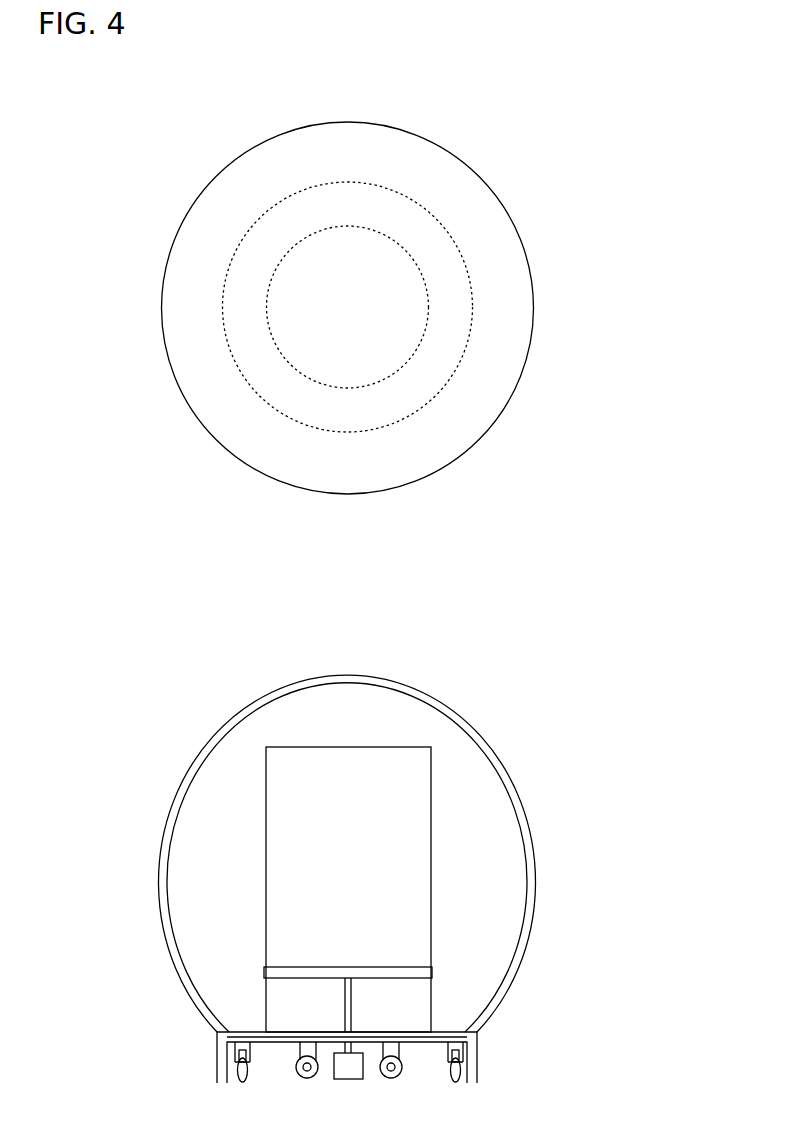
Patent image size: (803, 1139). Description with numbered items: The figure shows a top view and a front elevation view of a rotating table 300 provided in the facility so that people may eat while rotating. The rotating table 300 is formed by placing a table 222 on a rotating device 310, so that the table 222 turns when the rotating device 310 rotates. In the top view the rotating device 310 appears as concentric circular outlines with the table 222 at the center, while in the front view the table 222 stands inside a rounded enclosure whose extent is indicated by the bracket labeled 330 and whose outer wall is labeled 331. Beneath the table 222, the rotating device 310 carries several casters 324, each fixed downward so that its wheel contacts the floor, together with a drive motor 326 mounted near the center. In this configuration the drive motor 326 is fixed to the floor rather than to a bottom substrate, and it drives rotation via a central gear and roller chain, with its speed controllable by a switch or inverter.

The rotating table 300 is at (675, 72).
The rotating device 310 is at (468, 295).
The table 222 is at (290, 312).
The spherical cover 330 is at (107, 683).
The outer wall of spherical cover 331 is at (533, 862).
The caster 324 is at (243, 1073).
The drive motor 326 is at (350, 1068).